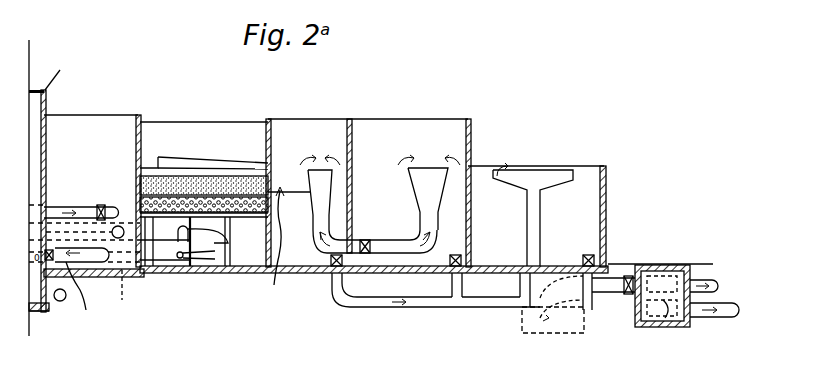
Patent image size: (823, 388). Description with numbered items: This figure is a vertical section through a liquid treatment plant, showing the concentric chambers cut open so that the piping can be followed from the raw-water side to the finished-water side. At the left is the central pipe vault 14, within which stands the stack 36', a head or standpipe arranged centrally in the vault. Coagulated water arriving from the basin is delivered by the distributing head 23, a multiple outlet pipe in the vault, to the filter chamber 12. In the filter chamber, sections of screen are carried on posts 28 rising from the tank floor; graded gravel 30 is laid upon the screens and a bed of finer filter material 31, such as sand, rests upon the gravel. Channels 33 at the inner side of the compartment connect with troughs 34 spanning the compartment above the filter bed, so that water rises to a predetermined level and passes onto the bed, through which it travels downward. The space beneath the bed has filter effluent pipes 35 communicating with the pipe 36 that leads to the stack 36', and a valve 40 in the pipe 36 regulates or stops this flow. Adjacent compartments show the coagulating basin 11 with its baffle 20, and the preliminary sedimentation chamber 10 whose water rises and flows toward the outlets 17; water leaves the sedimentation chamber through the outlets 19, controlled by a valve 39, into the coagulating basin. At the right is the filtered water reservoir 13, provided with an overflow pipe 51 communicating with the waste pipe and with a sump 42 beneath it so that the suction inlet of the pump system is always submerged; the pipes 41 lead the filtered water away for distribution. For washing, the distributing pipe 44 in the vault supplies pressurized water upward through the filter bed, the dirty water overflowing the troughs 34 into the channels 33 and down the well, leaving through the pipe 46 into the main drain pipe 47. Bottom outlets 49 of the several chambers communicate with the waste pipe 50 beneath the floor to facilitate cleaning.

The preliminary sedimentation chamber 10 is at (422, 109).
The coagulating basin 11 is at (307, 109).
The filter chamber 12 is at (205, 132).
The filtered water reservoir 13 is at (588, 167).
The central pipe vault 14 is at (78, 122).
The outlets 17 is at (425, 172).
The outlets 19 is at (318, 215).
The baffles 20 is at (273, 249).
The distributing head 23 is at (50, 268).
The posts 28 is at (228, 273).
The graded gravel 30 is at (242, 235).
The bed of finer filter material 31 is at (220, 182).
The channels 33 is at (150, 162).
The troughs 34 is at (176, 160).
The filter effluent pipes 35 is at (212, 273).
The pipe 36 is at (121, 299).
The stack 36' is at (64, 66).
The valves 39 is at (366, 238).
The valves 40 is at (62, 268).
The pipes 41 is at (712, 280).
The sump 42 is at (577, 324).
The distributing pipe 44 is at (120, 226).
The pipe 46 is at (82, 294).
The main drain pipe 47 is at (58, 301).
The bottom outlets 49 is at (330, 280).
The waste pipe 50 is at (375, 300).
The overflow pipe 51 is at (542, 210).